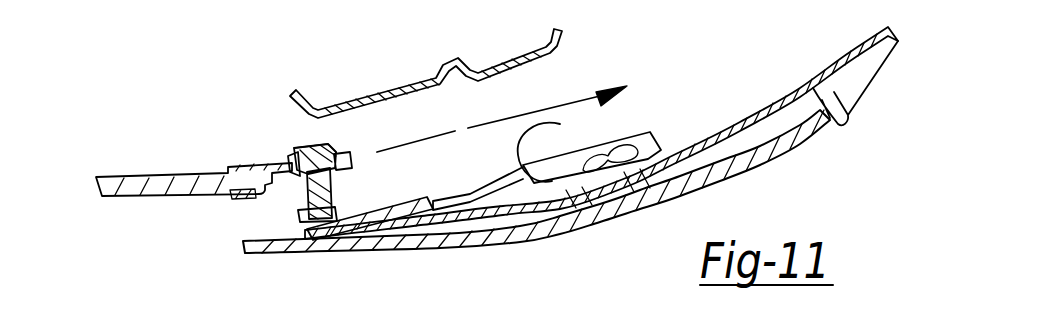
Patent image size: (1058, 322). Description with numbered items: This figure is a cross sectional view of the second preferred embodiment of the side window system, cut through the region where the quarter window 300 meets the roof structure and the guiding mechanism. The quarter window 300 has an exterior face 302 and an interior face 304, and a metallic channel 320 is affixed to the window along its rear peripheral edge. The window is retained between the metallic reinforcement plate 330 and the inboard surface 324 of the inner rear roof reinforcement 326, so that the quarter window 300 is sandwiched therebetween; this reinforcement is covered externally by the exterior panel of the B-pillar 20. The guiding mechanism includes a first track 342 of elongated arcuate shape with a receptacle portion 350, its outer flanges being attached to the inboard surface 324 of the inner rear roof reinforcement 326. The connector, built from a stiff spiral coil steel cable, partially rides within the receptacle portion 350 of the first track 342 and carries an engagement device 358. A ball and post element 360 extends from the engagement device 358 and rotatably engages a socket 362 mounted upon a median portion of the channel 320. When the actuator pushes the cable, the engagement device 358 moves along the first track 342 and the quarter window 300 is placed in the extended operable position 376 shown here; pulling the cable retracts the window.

The B-pillar 20 is at (776, 162).
The quarter window 300 is at (95, 177).
The exterior face 302 is at (123, 197).
The interior face 304 is at (158, 175).
The metallic channel 320 is at (237, 193).
The inboard surface 324 is at (732, 122).
The inner rear roof reinforcement 326 is at (778, 100).
The metallic reinforcement plate 330 is at (413, 83).
The first track 342 is at (653, 137).
The receptacle portion 350 is at (548, 124).
The engagement device 358 is at (407, 200).
The ball and post element 360 is at (302, 193).
The socket 362 is at (342, 147).
The extended operable position 376 is at (212, 162).